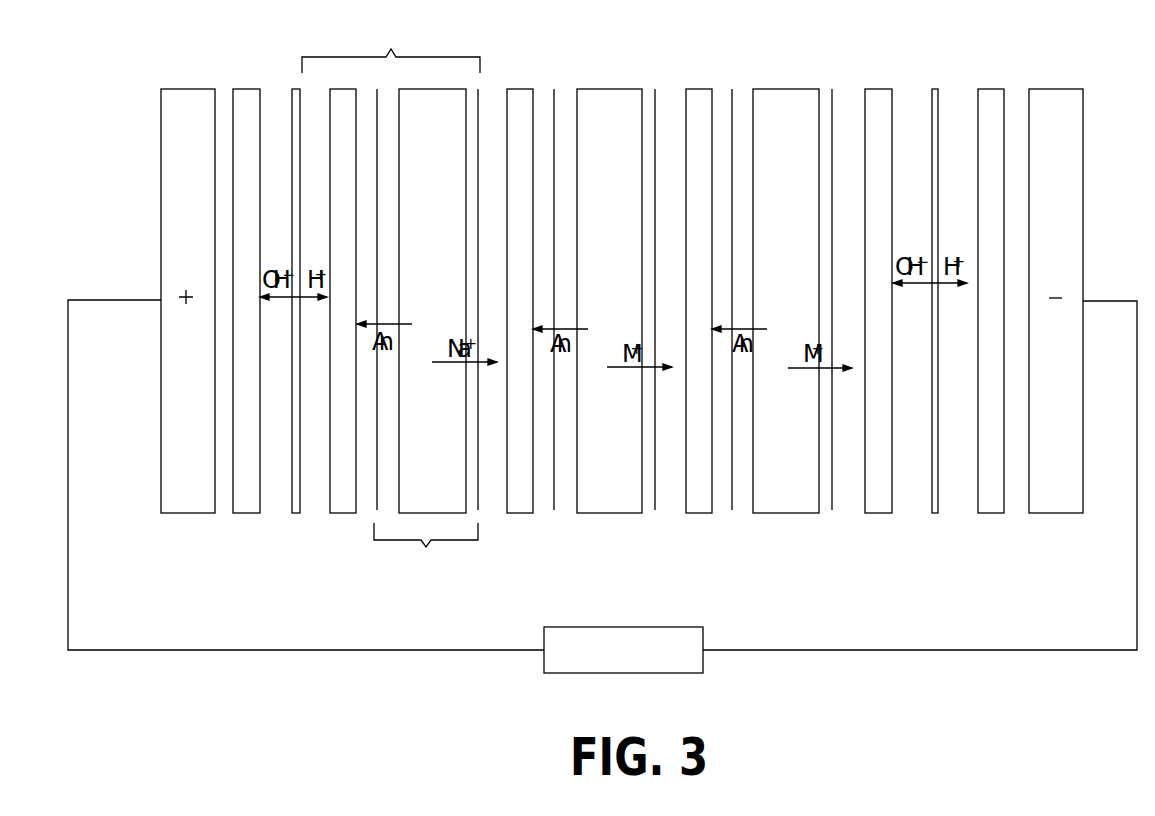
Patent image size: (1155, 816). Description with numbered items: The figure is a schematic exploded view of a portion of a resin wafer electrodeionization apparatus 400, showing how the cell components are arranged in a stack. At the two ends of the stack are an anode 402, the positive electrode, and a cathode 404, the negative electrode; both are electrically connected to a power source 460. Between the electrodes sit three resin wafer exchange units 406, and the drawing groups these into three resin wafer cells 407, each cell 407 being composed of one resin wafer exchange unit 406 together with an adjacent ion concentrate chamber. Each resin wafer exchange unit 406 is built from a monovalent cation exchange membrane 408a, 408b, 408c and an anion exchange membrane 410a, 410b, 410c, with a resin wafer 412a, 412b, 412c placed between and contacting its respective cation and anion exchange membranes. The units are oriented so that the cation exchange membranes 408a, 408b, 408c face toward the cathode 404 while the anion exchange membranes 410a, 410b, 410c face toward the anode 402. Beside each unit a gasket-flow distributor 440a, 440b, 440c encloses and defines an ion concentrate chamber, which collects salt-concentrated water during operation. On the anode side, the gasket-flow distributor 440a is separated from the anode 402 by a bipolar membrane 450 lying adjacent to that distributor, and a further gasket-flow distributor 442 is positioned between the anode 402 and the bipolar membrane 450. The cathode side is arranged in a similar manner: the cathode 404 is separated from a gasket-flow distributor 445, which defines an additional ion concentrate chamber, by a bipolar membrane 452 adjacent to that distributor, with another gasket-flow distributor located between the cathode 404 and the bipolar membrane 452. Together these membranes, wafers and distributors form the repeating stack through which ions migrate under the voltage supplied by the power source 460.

The RW-EDI apparatus 400 is at (868, 663).
The anode 402 is at (182, 503).
The cathode 404 is at (1047, 505).
The resin wafer exchange unit 406 is at (426, 553).
The resin wafer cell 407 is at (391, 42).
The monovalent cation exchange membrane 408a is at (478, 503).
The monovalent cation exchange membrane 408b is at (655, 510).
The monovalent cation exchange membrane 408c is at (832, 510).
The anion exchange membrane 410a is at (377, 510).
The anion exchange membrane 410b is at (554, 510).
The anion exchange membrane 410c is at (732, 510).
The resin wafer 412a is at (443, 89).
The resin wafer 412b is at (633, 89).
The resin wafer 412c is at (788, 89).
The gasket-flow distributor 440a is at (343, 513).
The gasket-flow distributor 440b is at (522, 89).
The gasket-flow distributor 440c is at (698, 89).
The gasket-flow distributor 442 is at (250, 89).
The gasket-flow distributor 445 is at (878, 89).
The bipolar membrane 450 is at (297, 513).
The bipolar membrane 452 is at (935, 513).
The power source 460 is at (637, 667).